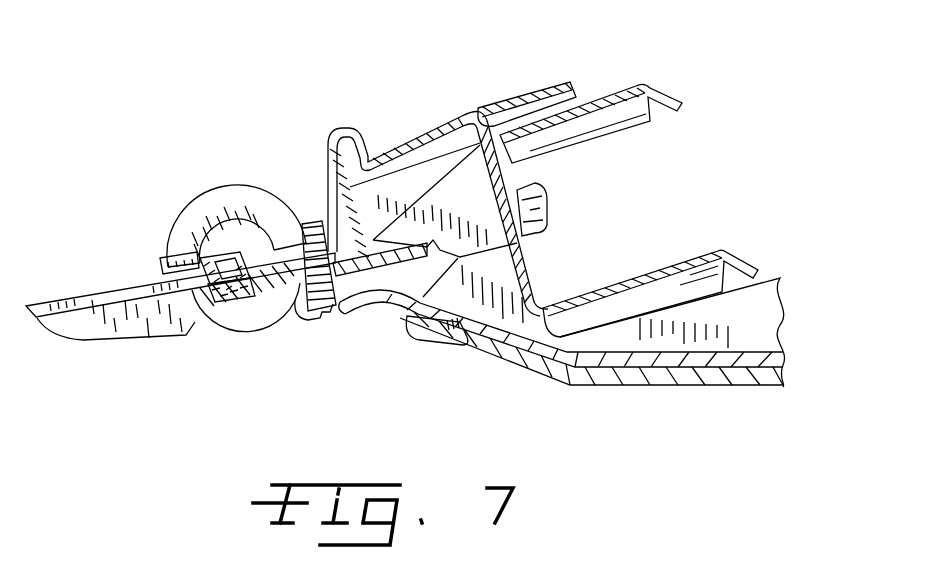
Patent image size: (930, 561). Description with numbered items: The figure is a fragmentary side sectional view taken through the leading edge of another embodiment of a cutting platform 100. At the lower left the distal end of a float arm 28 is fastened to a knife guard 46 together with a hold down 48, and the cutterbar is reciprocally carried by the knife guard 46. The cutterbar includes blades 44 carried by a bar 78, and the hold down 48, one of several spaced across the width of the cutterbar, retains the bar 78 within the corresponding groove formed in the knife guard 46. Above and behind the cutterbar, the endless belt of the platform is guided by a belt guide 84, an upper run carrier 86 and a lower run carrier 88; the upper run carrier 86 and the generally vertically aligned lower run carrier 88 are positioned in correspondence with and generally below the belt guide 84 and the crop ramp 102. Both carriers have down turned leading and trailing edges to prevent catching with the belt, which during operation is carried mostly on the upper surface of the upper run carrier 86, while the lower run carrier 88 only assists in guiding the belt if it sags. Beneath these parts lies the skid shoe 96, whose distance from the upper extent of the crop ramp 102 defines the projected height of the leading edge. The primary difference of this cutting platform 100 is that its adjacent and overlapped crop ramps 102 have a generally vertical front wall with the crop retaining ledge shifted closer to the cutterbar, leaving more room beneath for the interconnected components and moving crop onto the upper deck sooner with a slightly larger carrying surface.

The cutting platform 100 is at (176, 102).
The float arm 28 is at (760, 325).
The blades 44 is at (70, 293).
The knife guard 46 is at (112, 347).
The hold down 48 is at (230, 185).
The bar 78 is at (222, 293).
The belt guide 84 is at (541, 93).
The upper run carrier 86 is at (680, 94).
The lower run carrier 88 is at (740, 253).
The skid shoe 96 is at (570, 387).
The crop ramp 102 is at (417, 130).